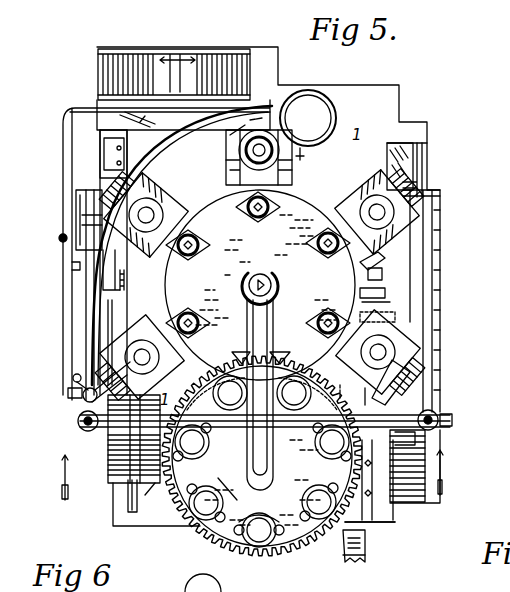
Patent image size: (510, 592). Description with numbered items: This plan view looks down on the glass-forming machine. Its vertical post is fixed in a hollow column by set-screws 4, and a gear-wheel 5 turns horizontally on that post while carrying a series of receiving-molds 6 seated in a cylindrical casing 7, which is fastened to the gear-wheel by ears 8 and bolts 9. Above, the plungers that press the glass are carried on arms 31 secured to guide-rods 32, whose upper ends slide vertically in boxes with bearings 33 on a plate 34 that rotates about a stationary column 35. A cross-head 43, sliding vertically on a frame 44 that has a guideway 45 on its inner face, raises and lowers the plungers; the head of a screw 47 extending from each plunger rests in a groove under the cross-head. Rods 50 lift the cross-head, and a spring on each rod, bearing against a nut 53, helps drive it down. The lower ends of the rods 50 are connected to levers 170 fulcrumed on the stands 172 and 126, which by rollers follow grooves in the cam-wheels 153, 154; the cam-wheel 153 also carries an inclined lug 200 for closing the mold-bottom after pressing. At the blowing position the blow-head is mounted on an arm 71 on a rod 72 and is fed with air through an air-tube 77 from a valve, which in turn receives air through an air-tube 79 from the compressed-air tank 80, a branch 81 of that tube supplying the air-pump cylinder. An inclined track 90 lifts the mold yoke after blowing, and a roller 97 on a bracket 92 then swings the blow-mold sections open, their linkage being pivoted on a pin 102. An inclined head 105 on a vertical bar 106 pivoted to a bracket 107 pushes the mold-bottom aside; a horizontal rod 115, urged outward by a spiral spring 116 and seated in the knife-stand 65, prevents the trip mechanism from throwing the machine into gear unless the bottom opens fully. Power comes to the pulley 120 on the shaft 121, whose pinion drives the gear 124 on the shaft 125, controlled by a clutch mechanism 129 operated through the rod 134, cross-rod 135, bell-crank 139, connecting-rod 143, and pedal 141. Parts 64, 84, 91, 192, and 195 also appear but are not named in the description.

The set-screws 4 is at (154, 583).
The gear-wheel 5 is at (282, 546).
The receiving-molds 6 is at (169, 509).
The cylindrical casing 7 is at (259, 547).
The ears 8 is at (237, 544).
The bolts 9 is at (230, 540).
The arms 31 is at (285, 173).
The guide-rods 32 is at (254, 229).
The bearings 33 is at (177, 283).
The plate 34 is at (258, 278).
The stationary column 35 is at (275, 277).
The cross-head 43 is at (363, 396).
The frame 44 is at (230, 488).
The guideway 45 is at (238, 462).
The screw 47 is at (376, 200).
The rods 50 is at (78, 427).
The nut 53 is at (76, 433).
The lever 64 is at (402, 392).
The knife-stand 65 is at (380, 512).
The arm 71 is at (74, 381).
The rod 72 is at (84, 399).
The air-tube 77 is at (107, 342).
The air-tube 79 is at (66, 291).
The compressed-air tank 80 is at (308, 125).
The branch 81 is at (85, 222).
The stop 84 is at (44, 393).
The track 90 is at (182, 245).
The pipe 91 is at (137, 119).
The bracket 92 is at (244, 159).
The roller 97 is at (228, 138).
The pin 102 is at (390, 304).
The inclined head 105 is at (386, 259).
The vertical bar 106 is at (392, 274).
The bracket 107 is at (389, 291).
The horizontal rod 115 is at (347, 360).
The spiral spring 116 is at (261, 462).
The pulley 120 is at (98, 76).
The shaft 121 is at (214, 29).
The gear 124 is at (90, 210).
The shaft 125 is at (128, 507).
The stand 126 is at (124, 160).
The clutch mechanism 129 is at (104, 271).
The rod 134 is at (143, 284).
The cross-rod 135 is at (154, 492).
The bell-crank 139 is at (368, 530).
The pedal 141 is at (368, 551).
The connecting-rod 143 is at (373, 539).
The cam-wheel 153 is at (428, 498).
The cam-wheel 154 is at (90, 501).
The levers 170 is at (76, 267).
The stand 172 is at (423, 173).
The coil block 192 is at (176, 430).
The arm 195 is at (270, 322).
The lug 200 is at (416, 440).